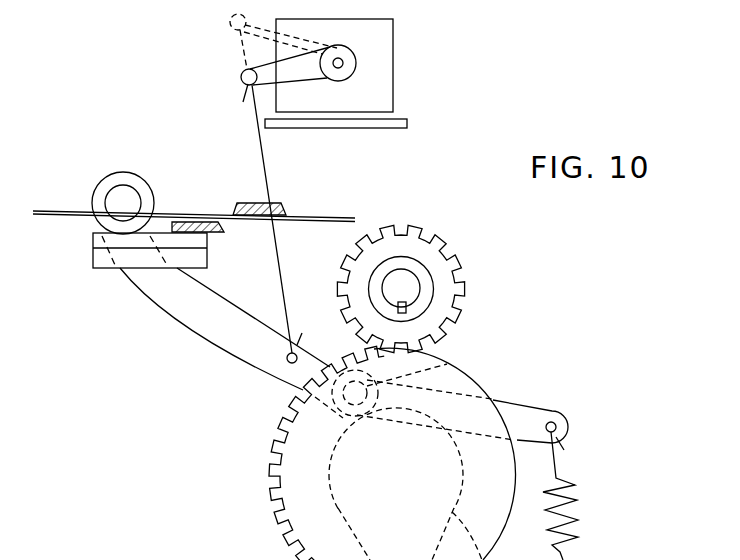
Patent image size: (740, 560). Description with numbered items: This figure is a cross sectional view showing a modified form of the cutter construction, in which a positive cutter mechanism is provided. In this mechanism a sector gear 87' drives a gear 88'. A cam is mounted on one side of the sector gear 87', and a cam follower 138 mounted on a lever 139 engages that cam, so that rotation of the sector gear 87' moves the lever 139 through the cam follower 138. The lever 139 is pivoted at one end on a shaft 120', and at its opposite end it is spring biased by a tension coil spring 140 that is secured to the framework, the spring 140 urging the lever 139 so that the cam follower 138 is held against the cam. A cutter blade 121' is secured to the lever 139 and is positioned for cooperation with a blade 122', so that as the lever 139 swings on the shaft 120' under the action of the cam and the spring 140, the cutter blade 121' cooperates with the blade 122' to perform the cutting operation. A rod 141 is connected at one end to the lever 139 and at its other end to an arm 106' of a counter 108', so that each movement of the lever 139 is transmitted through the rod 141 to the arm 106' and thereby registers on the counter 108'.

The counter 108' is at (365, 73).
The arm 106' is at (293, 61).
The rod 141 is at (268, 167).
The shaft 120' is at (194, 199).
The cutter blade 121' is at (183, 249).
The blade 122' is at (301, 196).
The lever 139 is at (192, 313).
The gear 88' is at (433, 288).
The sector gear 87' is at (357, 453).
The cam follower 138 is at (440, 359).
The tension coil spring 140 is at (577, 508).